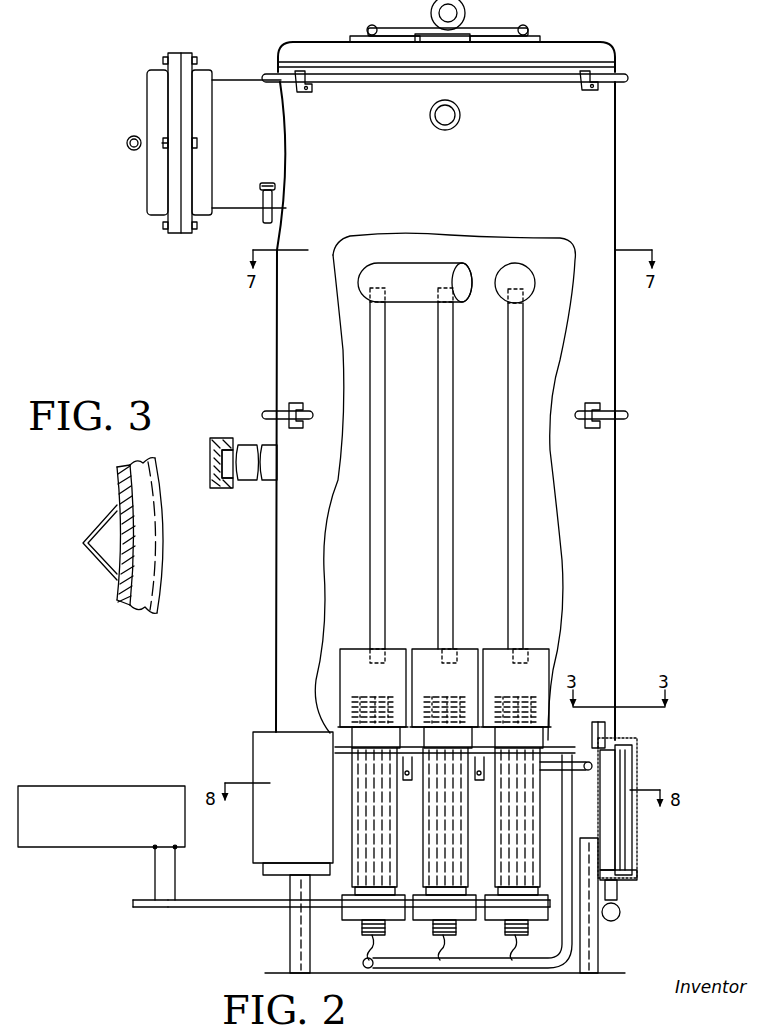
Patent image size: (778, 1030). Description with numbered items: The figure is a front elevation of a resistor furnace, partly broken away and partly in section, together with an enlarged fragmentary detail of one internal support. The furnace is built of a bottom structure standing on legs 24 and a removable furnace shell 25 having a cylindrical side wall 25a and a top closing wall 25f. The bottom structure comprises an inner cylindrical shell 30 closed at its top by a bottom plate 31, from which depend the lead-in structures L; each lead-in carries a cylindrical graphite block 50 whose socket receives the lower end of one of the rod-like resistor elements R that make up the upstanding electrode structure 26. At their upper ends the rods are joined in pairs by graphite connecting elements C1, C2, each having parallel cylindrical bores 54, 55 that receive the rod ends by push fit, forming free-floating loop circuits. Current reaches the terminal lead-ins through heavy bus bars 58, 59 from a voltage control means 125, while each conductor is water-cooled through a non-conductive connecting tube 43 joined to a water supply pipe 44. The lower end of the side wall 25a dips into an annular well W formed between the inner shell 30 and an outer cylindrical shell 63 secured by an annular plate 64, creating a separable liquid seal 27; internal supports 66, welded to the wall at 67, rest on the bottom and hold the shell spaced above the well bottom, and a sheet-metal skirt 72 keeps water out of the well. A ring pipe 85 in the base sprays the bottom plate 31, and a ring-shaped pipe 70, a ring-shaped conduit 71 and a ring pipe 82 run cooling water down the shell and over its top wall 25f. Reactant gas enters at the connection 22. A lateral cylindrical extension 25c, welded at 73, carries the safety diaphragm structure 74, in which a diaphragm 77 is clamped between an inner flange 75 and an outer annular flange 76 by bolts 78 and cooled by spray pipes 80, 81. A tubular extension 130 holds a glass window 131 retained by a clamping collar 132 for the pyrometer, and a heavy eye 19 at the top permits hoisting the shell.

In FIG. 2, the heavy eye 19 is at (466, 12).
In FIG. 2, the ring pipe 82 is at (367, 28).
In FIG. 2, the tank lid 25f is at (612, 48).
In FIG. 2, the ring-shaped pipe 70 is at (633, 80).
In FIG. 2, the lateral cylindrical extension 25c is at (249, 78).
In FIG. 2, the diaphragm 77 is at (180, 62).
In FIG. 2, the spray pipe 81 is at (127, 138).
In FIG. 2, the clamping bolts 78 is at (162, 145).
In FIG. 2, the outer annular flange 76 is at (170, 197).
In FIG. 2, the safety diaphragm structure 74 is at (173, 237).
In FIG. 2, the inner flange 75 is at (195, 232).
In FIG. 2, the spray pipe 80 is at (264, 210).
In FIG. 2, the weld 73 is at (286, 165).
In FIG. 2, the pipe connection 22 is at (458, 128).
In FIG. 2, the cylindrical bore 55 is at (440, 289).
In FIG. 2, the electrode structure 26 is at (497, 270).
In FIG. 2, the cylindrical bore 54 is at (365, 291).
In FIG. 2, the connecting element C1 is at (425, 304).
In FIG. 2, the connecting element C2 is at (504, 302).
In FIG. 2, the rod-like resistor elements R is at (506, 434).
In FIG. 2, the clamping collar 132 is at (222, 440).
In FIG. 2, the tubular extension 130 is at (250, 445).
In FIG. 2, the glass window 131 is at (216, 456).
In FIG. 2, the ring-shaped conduit 71 is at (632, 414).
In FIG. 3, the cylindrical side wall 25a is at (118, 603).
In FIG. 2, the furnace shell 25 is at (616, 585).
In FIG. 2, the cylindrical graphite block 50 is at (356, 650).
In FIG. 2, the bottom plate 31 is at (558, 750).
In FIG. 2, the internal supports 66 is at (600, 728).
In FIG. 3, the internal supports 66 is at (88, 545).
In FIG. 3, the separable seal 27 is at (170, 537).
In FIG. 3, the sheet-metal skirt 72 is at (165, 572).
In FIG. 2, the inner cylindrical shell 30 is at (628, 781).
In FIG. 2, the ring pipe 85 is at (578, 771).
In FIG. 2, the outer cylindrical shell 63 is at (625, 830).
In FIG. 2, the annular well W is at (620, 850).
In FIG. 2, the annular plate 64 is at (620, 880).
In FIG. 2, the voltage control means 125 is at (82, 786).
In FIG. 2, the bus bar 59 is at (150, 904).
In FIG. 2, the bus bar 58 is at (193, 904).
In FIG. 2, the legs 24 is at (293, 950).
In FIG. 2, the non-conductive connecting tube 43 is at (372, 941).
In FIG. 2, the water supply pipe 44 is at (502, 966).
In FIG. 2, the lead-in structures L is at (495, 831).
In FIG. 3, the weld 67 is at (116, 505).